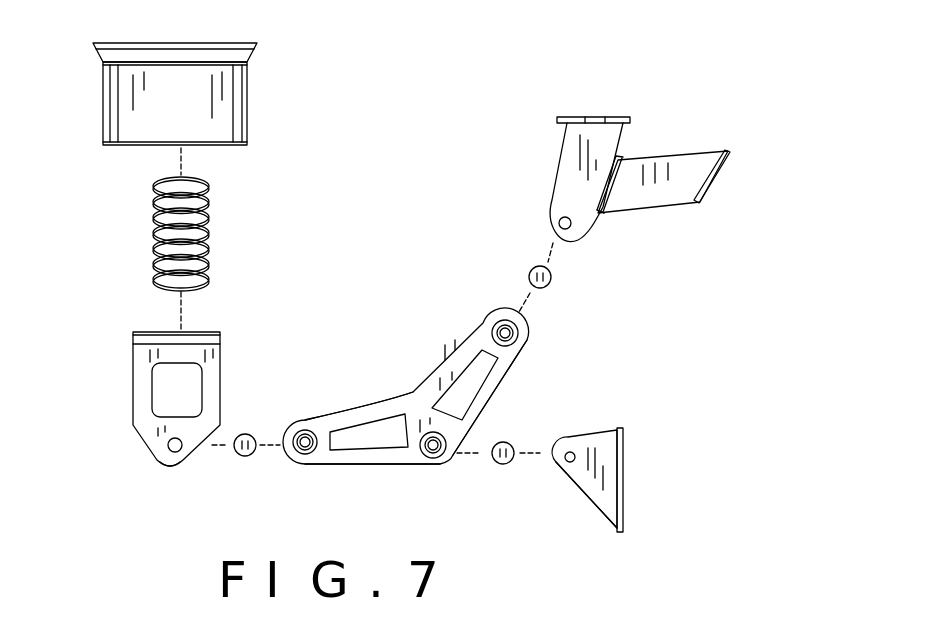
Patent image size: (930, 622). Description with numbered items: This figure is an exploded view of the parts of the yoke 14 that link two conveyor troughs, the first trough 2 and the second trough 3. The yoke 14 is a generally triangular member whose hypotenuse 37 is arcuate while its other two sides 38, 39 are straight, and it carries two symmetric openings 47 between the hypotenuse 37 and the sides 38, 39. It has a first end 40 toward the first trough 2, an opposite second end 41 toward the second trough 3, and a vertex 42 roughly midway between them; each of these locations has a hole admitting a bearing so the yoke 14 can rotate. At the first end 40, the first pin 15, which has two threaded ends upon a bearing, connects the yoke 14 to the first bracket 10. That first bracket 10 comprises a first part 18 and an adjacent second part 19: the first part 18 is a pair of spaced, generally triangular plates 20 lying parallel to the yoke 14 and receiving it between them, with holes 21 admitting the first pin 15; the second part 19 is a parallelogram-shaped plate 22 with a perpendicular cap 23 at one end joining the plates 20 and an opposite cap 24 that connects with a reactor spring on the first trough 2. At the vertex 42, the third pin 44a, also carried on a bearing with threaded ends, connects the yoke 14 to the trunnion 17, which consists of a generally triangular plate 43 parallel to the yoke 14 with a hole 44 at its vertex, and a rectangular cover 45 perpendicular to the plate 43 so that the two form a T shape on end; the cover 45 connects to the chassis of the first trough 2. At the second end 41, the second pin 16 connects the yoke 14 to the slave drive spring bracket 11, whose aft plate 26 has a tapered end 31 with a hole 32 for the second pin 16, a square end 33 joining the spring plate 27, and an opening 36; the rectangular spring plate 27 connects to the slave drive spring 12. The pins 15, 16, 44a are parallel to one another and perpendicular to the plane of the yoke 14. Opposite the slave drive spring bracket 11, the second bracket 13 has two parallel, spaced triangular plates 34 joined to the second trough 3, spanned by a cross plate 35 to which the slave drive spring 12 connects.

The first trough 2 is at (580, 117).
The second trough 3 is at (179, 43).
The first bracket 10 is at (634, 169).
The slave drive spring bracket 11 is at (171, 390).
The slave drive spring 12 is at (155, 215).
The second bracket 13 is at (174, 76).
The yoke 14 is at (420, 399).
The first pin 15 is at (532, 268).
The second pin 16 is at (245, 457).
The trunnion 17 is at (617, 465).
The first part 18 is at (552, 149).
The second part 19 is at (693, 175).
The triangular plates 20 is at (616, 212).
The holes 21 is at (559, 219).
The plate 22 is at (690, 170).
The perpendicular cap 23 is at (618, 160).
The opposite cap 24 is at (710, 193).
The aft plate 26 is at (210, 412).
The spring plate 27 is at (140, 332).
The tapered end 31 is at (177, 462).
The hole 32 is at (166, 445).
The square end 33 is at (215, 353).
The triangular plates 34 is at (113, 112).
The cross plate 35 is at (247, 145).
The opening 36 is at (183, 387).
The hypotenuse 37 is at (417, 387).
The side 38 is at (520, 363).
The side 39 is at (412, 463).
The first end 40 is at (505, 311).
The second end 41 is at (290, 460).
The vertex 42 is at (445, 467).
The triangular plate 43 is at (592, 487).
The hole 44 is at (574, 453).
The third pin 44a is at (505, 465).
The cover 45 is at (623, 493).
The symmetric openings 47 is at (385, 438).